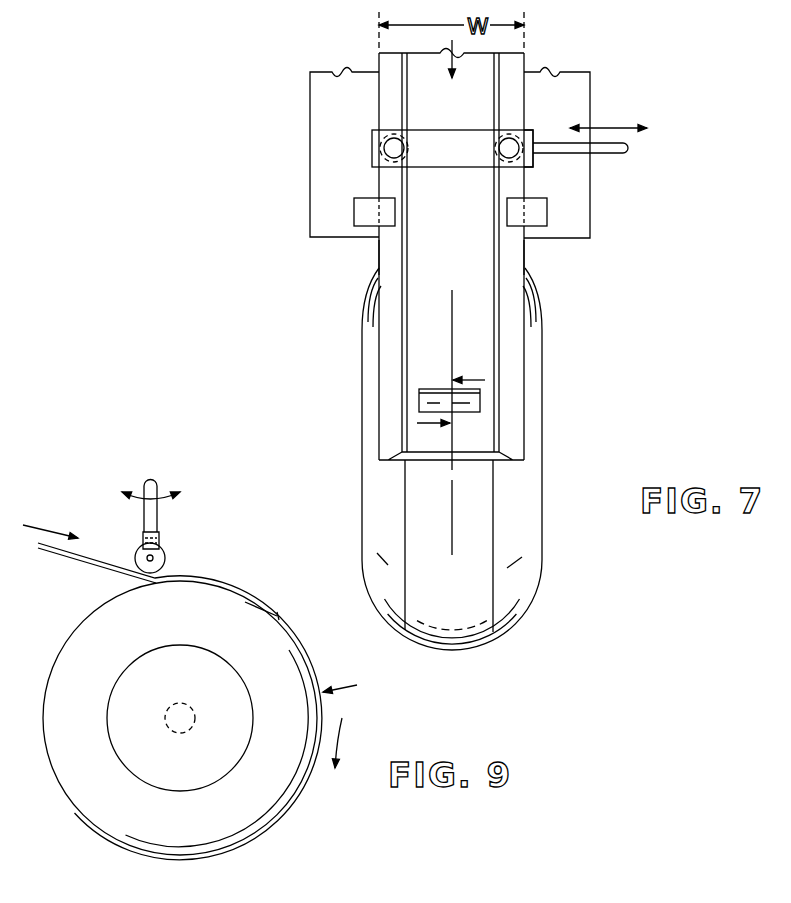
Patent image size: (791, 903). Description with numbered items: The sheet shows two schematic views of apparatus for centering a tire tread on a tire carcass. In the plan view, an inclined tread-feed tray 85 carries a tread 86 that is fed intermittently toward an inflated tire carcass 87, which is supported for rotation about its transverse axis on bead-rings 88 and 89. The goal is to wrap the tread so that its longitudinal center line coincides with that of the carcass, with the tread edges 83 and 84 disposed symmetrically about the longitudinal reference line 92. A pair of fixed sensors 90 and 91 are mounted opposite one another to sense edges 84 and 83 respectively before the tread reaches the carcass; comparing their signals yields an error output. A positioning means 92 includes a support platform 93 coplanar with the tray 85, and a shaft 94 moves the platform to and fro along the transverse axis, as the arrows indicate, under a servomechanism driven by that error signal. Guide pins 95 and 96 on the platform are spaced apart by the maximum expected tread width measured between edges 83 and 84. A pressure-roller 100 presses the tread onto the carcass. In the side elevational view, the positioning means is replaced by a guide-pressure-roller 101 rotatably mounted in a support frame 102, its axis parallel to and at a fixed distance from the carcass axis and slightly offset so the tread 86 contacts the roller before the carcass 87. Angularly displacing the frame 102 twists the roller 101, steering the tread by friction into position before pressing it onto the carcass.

In FIG. 7, the tread edge 83 is at (526, 268).
In FIG. 7, the tread edge 84 is at (377, 270).
In FIG. 7, the tread-feed tray 85 is at (590, 88).
In FIG. 7, the tread 86 is at (466, 259).
In FIG. 9, the tread 86 is at (88, 566).
In FIG. 7, the tire carcass 87 is at (466, 584).
In FIG. 9, the tire carcass 87 is at (218, 718).
In FIG. 7, the bead-ring 88 is at (362, 512).
In FIG. 7, the bead-ring 89 is at (541, 520).
In FIG. 7, the sensor 90 is at (358, 240).
In FIG. 7, the sensor 91 is at (535, 232).
In FIG. 7, the positioning means 92 is at (368, 143).
In FIG. 7, the support platform 93 is at (533, 130).
In FIG. 7, the shaft 94 is at (616, 153).
In FIG. 7, the guide pin 95 is at (405, 135).
In FIG. 7, the guide pin 96 is at (501, 160).
In FIG. 7, the pressure-roller 100 is at (434, 393).
In FIG. 9, the guide-pressure-roller 101 is at (164, 556).
In FIG. 9, the support frame 102 is at (142, 540).